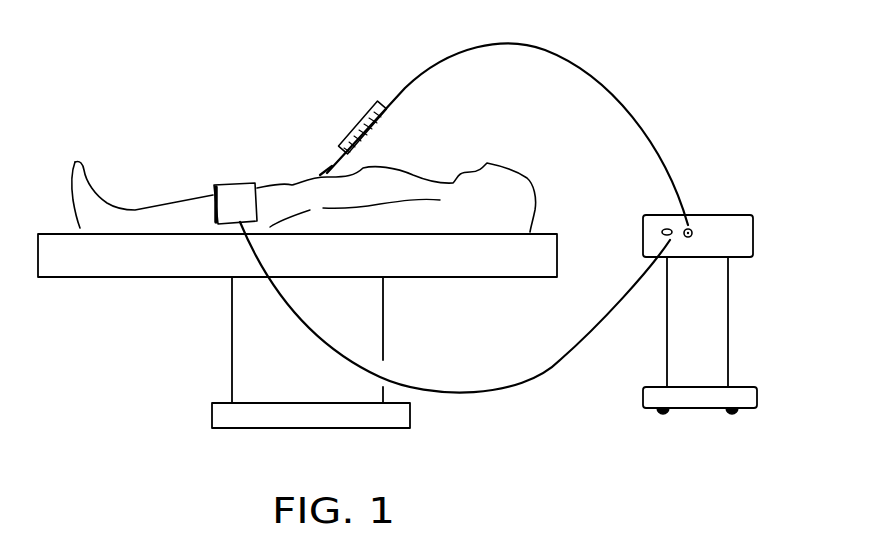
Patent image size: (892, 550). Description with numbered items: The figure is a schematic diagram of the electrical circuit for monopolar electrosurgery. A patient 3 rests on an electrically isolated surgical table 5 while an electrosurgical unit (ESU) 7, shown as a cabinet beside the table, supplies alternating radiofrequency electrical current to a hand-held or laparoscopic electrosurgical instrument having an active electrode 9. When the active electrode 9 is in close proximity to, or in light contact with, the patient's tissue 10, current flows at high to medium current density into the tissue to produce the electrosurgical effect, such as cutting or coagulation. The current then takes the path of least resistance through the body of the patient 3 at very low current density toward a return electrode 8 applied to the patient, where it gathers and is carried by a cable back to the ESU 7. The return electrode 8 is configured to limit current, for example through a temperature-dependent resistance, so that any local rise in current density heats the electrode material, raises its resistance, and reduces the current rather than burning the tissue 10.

The patient 3 is at (167, 205).
The electrically isolated surgical table 5 is at (148, 262).
The electrosurgical unit (ESU) 7 is at (748, 218).
The return electrode 8 is at (230, 202).
The active electrode 9 is at (352, 116).
The patient's tissue 10 is at (320, 173).